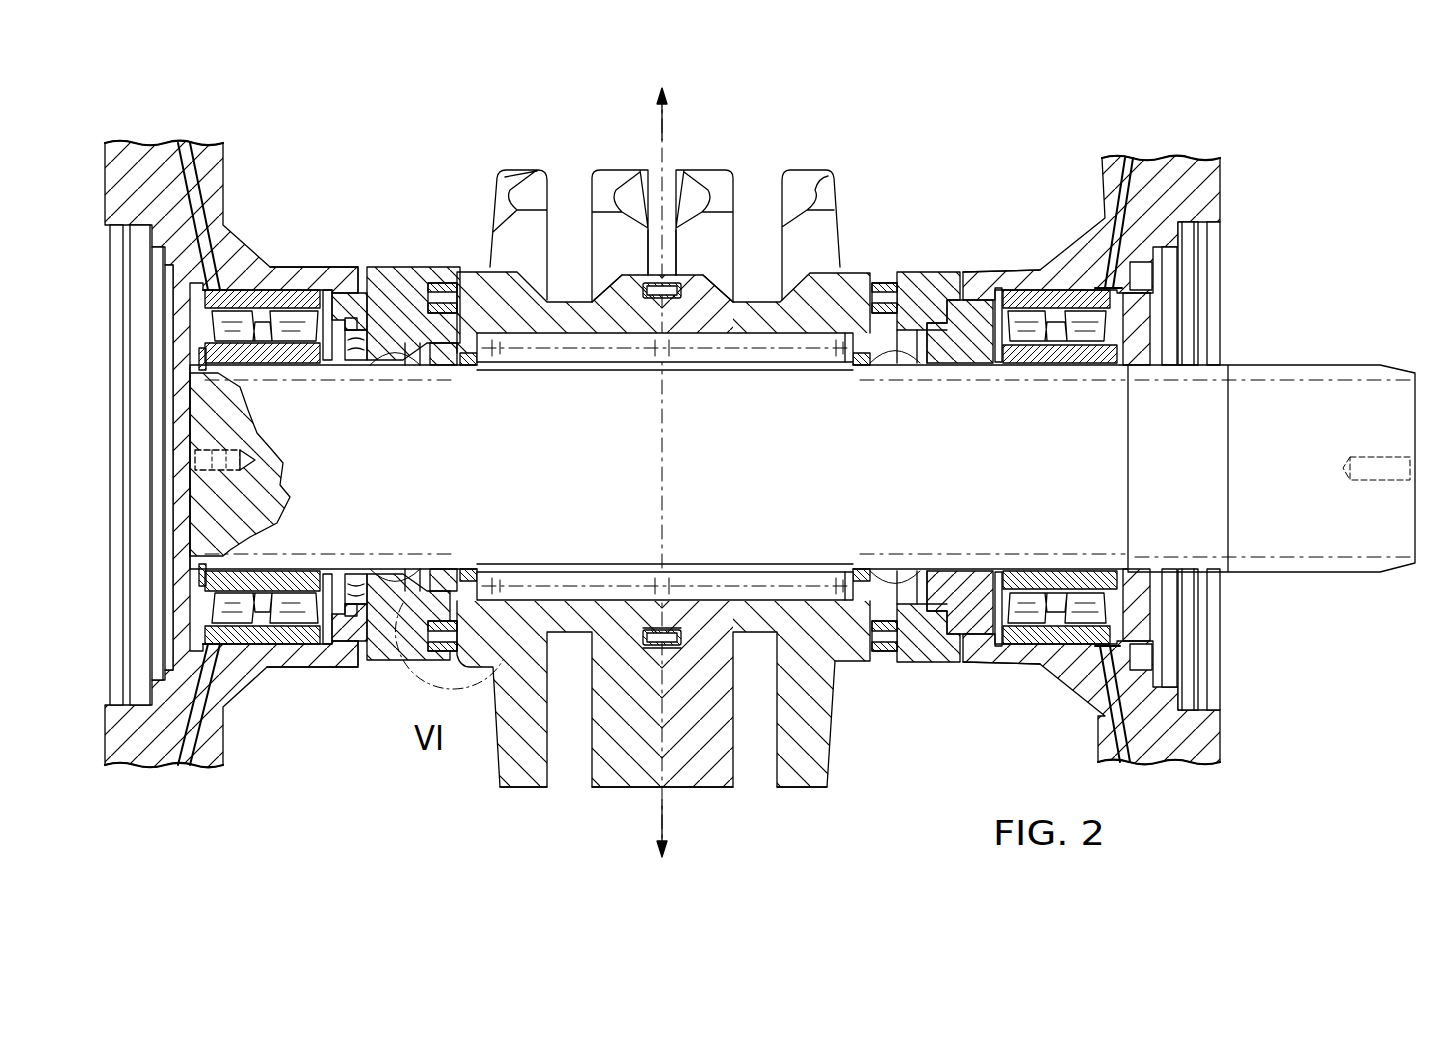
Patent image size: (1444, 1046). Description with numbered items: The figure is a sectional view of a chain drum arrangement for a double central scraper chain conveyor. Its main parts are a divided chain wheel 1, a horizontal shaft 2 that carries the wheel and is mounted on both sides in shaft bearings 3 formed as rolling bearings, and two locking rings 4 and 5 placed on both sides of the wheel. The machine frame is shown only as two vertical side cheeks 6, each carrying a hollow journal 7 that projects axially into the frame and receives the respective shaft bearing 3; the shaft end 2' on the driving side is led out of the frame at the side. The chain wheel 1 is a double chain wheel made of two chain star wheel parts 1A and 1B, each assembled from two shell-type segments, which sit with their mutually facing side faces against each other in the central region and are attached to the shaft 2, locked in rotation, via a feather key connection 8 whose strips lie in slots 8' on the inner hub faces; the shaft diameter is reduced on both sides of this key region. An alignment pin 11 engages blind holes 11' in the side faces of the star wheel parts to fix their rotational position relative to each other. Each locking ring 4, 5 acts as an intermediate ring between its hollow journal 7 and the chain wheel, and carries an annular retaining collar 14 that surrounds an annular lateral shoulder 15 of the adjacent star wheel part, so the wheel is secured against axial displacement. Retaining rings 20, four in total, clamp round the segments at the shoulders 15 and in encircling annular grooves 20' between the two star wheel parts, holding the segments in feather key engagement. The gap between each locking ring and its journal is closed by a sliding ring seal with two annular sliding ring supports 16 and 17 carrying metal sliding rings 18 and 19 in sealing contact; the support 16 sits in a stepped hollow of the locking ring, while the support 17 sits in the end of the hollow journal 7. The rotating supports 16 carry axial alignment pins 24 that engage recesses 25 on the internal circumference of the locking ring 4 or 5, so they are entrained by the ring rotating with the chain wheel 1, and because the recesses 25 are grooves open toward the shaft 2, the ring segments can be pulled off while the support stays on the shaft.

The divided chain wheel 1 is at (678, 157).
The chain star wheel part 1A is at (610, 773).
The chain star wheel part 1B is at (715, 765).
The horizontal shaft 2 is at (802, 431).
The shaft end 2' is at (1391, 392).
The shaft bearing 3 is at (237, 317).
The divided locking ring 4 is at (395, 287).
The locking ring 5 is at (942, 283).
The side cheek 6 is at (210, 165).
The hollow journal 7 is at (303, 277).
The feather key connection 8 is at (665, 466).
The feather key slot 8' is at (831, 466).
The alignment pin 11 is at (644, 321).
The blind hole 11' is at (648, 344).
The annular retaining collar 14 is at (443, 287).
The annular lateral shoulder 15 is at (460, 345).
The sliding ring support 16 is at (388, 362).
The sliding ring support 17 is at (333, 362).
The metal sliding ring 18 is at (955, 342).
The metal sliding ring 19 is at (973, 362).
The retaining ring 20 is at (706, 421).
The annular groove 20' is at (651, 559).
The axial alignment pin 24 is at (408, 385).
The recess 25 is at (430, 352).